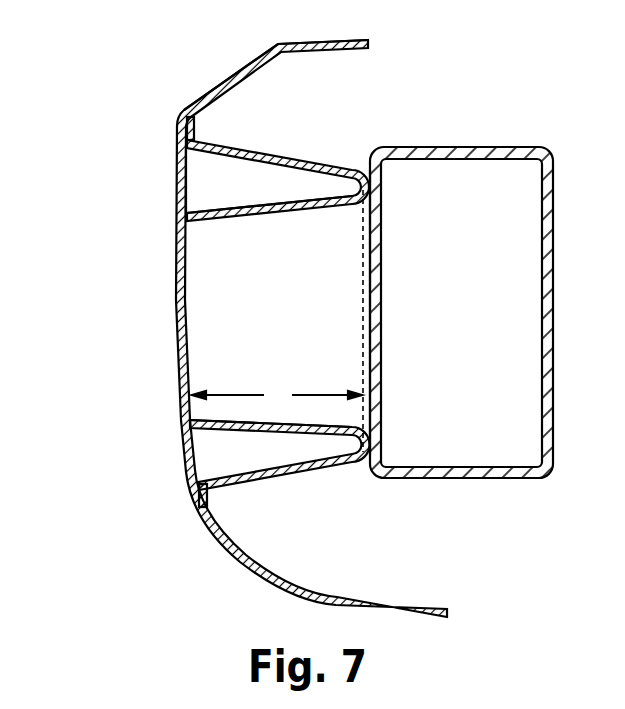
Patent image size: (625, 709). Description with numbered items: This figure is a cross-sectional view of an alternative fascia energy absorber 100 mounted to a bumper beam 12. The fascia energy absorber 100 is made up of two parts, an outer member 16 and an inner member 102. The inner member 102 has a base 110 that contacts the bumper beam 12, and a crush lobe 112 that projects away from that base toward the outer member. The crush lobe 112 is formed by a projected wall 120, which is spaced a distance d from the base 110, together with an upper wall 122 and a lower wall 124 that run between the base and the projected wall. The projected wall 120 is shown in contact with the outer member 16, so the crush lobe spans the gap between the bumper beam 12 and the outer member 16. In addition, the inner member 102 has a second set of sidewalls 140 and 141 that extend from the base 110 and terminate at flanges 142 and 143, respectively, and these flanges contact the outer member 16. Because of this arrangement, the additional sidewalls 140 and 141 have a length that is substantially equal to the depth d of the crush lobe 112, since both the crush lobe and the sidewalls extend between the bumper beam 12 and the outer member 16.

The bumper beam 12 is at (490, 158).
The outer member 16 is at (238, 73).
The fascia energy absorber 100 is at (110, 135).
The inner member 102 is at (364, 128).
The base 110 is at (370, 183).
The crush lobe 112 is at (226, 328).
The projected wall 120 is at (188, 269).
The upper wall 122 is at (260, 201).
The lower wall 124 is at (244, 428).
The sidewall 140 is at (303, 161).
The sidewall 141 is at (287, 477).
The flange 142 is at (194, 124).
The flange 143 is at (210, 500).